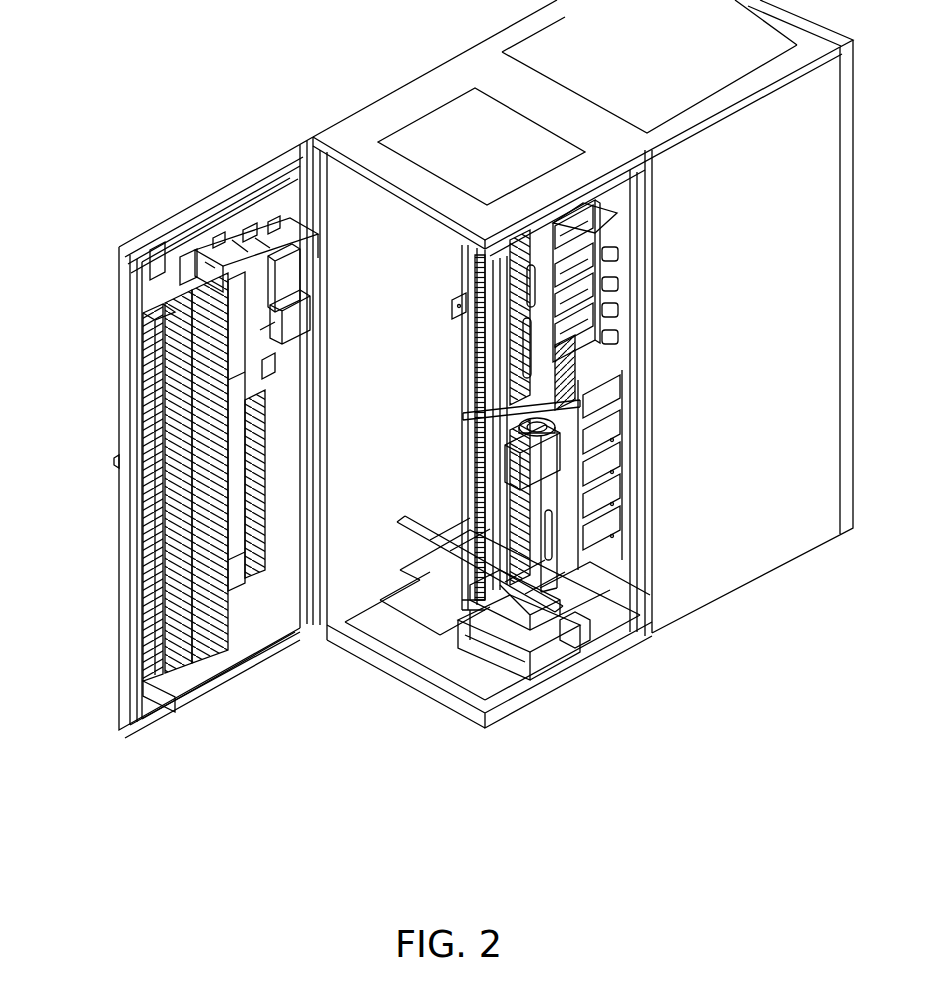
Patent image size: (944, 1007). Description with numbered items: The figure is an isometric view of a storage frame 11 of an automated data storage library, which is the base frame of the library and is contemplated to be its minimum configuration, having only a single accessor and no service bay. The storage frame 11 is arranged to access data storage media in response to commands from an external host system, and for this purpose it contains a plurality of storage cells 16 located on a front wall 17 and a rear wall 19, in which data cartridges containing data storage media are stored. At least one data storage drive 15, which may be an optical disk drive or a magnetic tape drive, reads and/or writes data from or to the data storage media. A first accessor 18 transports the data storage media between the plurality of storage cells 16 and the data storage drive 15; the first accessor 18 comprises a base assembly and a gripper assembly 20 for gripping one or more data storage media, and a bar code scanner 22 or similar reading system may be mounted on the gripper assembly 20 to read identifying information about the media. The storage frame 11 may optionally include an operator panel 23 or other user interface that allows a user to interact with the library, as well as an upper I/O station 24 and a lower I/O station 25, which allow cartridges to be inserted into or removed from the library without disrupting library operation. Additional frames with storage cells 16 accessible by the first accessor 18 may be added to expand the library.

The storage frame 11 is at (372, 735).
The data storage drive 15 is at (613, 238).
The storage cells 16 is at (463, 350).
The front wall 17 is at (122, 410).
The first accessor 18 is at (527, 645).
The rear wall 19 is at (458, 281).
The gripper assembly 20 is at (600, 440).
The bar code scanner 22 is at (503, 470).
The operator panel 23 is at (288, 253).
The upper I/O station 24 is at (282, 283).
The lower I/O station 25 is at (282, 460).